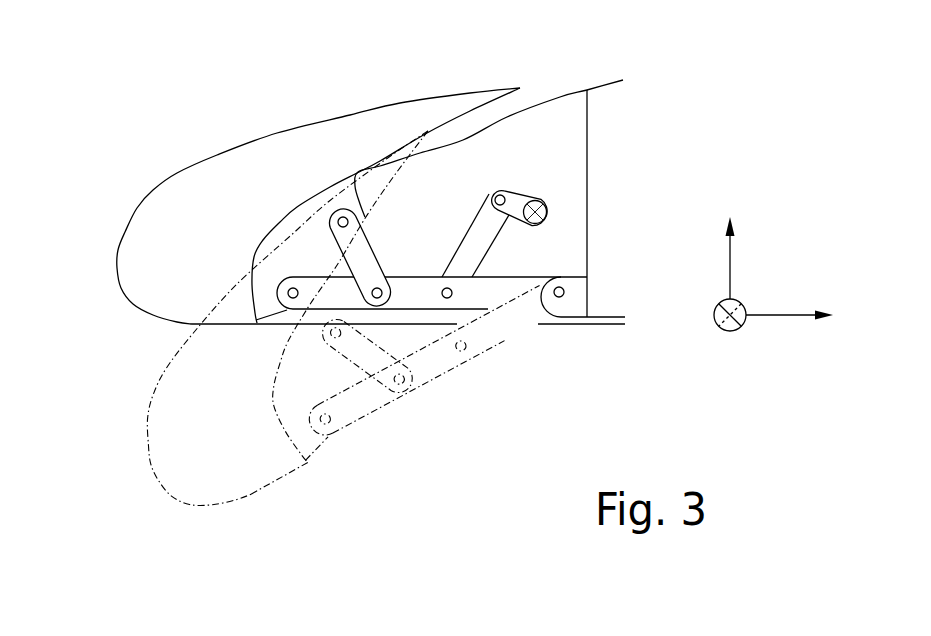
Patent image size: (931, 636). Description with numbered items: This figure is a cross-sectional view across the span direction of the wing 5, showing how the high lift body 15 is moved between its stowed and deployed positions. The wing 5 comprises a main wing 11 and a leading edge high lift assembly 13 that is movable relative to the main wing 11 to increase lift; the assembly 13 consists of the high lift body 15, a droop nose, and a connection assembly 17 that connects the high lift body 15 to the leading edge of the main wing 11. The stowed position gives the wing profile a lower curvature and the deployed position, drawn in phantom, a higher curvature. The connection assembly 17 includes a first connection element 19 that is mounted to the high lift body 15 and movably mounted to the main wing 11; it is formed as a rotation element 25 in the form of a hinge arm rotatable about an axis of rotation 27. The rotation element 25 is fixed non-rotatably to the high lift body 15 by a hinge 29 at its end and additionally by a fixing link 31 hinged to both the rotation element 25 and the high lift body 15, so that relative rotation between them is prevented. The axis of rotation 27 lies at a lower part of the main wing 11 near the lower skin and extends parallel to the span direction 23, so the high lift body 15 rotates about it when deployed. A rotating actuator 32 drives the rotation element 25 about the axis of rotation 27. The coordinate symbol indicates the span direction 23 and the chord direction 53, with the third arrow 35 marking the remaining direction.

The wing 5 is at (139, 168).
The main wing 11 is at (632, 212).
The leading edge high lift assembly 13 is at (266, 94).
The high lift body 15 is at (155, 235).
The connection assembly 17 is at (491, 403).
The first connection element 19 is at (395, 237).
The span direction 23 is at (726, 332).
The rotation element 25 is at (413, 287).
The axis of rotation 27 is at (562, 291).
The hinge 29 is at (292, 290).
The fixing link 31 is at (360, 252).
The rotating actuator 32 is at (520, 194).
The vertical direction 35 is at (733, 258).
The chord direction 53 is at (787, 318).